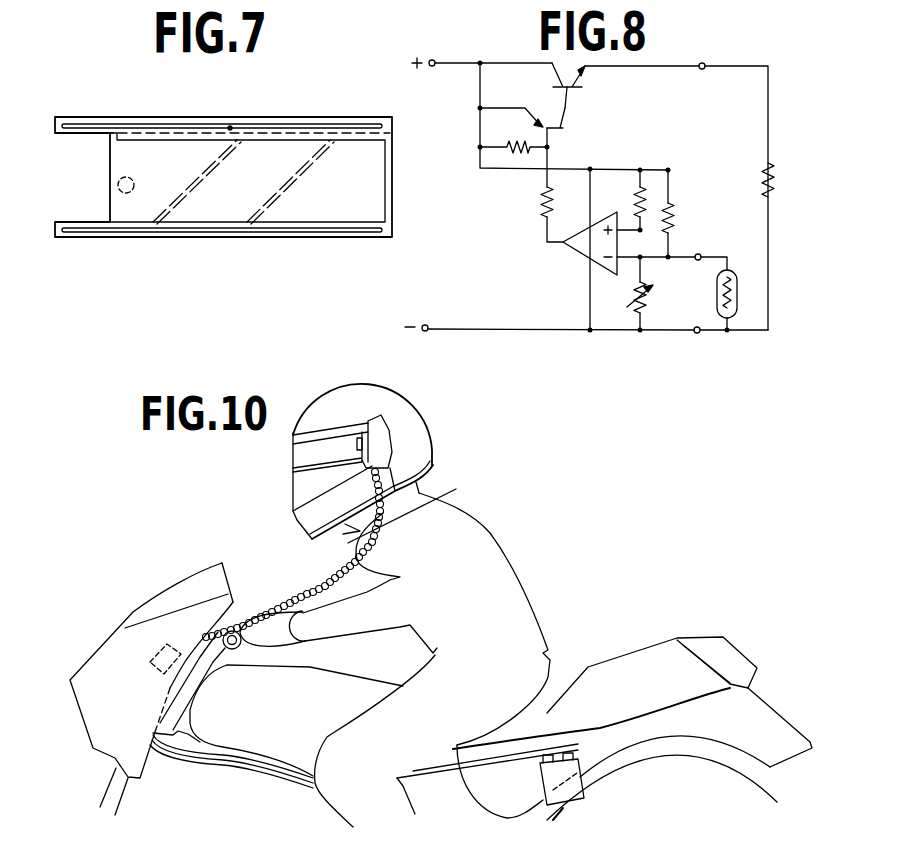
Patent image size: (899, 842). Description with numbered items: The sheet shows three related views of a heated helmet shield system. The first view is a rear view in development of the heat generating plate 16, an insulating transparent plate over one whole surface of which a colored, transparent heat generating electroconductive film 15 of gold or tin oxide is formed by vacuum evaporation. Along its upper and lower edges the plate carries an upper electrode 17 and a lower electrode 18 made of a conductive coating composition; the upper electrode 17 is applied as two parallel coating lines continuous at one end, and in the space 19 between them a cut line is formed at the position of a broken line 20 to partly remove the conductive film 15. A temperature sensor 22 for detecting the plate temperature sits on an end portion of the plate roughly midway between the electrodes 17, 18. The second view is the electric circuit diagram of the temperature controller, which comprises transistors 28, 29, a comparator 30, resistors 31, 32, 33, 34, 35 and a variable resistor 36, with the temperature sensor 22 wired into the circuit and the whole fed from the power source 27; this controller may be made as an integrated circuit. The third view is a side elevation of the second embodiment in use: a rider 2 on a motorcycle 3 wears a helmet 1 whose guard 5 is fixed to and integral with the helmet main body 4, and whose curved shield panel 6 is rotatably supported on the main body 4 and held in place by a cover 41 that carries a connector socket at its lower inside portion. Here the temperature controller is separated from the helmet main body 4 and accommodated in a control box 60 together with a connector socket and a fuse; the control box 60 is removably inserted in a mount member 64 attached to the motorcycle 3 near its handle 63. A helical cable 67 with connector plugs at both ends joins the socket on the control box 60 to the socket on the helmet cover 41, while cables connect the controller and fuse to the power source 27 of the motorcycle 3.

In FIG. 10, the helmet 1 is at (362, 460).
In FIG. 10, the rider 2 is at (395, 648).
In FIG. 10, the motorcycle 3 is at (590, 653).
In FIG. 10, the helmet main body 4 is at (387, 395).
In FIG. 10, the guard 5 is at (317, 521).
In FIG. 10, the shield panel 6 is at (302, 489).
In FIG. 7, the heat generating electroconductive film 15 is at (200, 213).
In FIG. 7, the heat generating plate 16 is at (398, 190).
In FIG. 7, the upper electrode 17 is at (330, 135).
In FIG. 7, the lower electrode 18 is at (298, 227).
In FIG. 7, the space 19 is at (230, 127).
In FIG. 7, the broken line 20 is at (188, 132).
In FIG. 7, the temperature sensor 22 is at (118, 186).
In FIG. 8, the temperature sensor 22 is at (716, 300).
In FIG. 10, the power source 27 is at (584, 797).
In FIG. 8, the transistor 28 is at (581, 78).
In FIG. 8, the transistor 29 is at (561, 114).
In FIG. 8, the comparator 30 is at (592, 247).
In FIG. 8, the resistor 31 is at (516, 145).
In FIG. 8, the resistor 32 is at (634, 200).
In FIG. 8, the resistor 33 is at (676, 215).
In FIG. 8, the resistor 34 is at (776, 180).
In FIG. 8, the resistor 35 is at (540, 206).
In FIG. 8, the variable resistor 36 is at (649, 303).
In FIG. 10, the cover 41 is at (383, 436).
In FIG. 10, the control box 60 is at (170, 647).
In FIG. 10, the handle 63 is at (236, 631).
In FIG. 10, the mount member 64 is at (150, 662).
In FIG. 10, the helical cable 67 is at (483, 552).